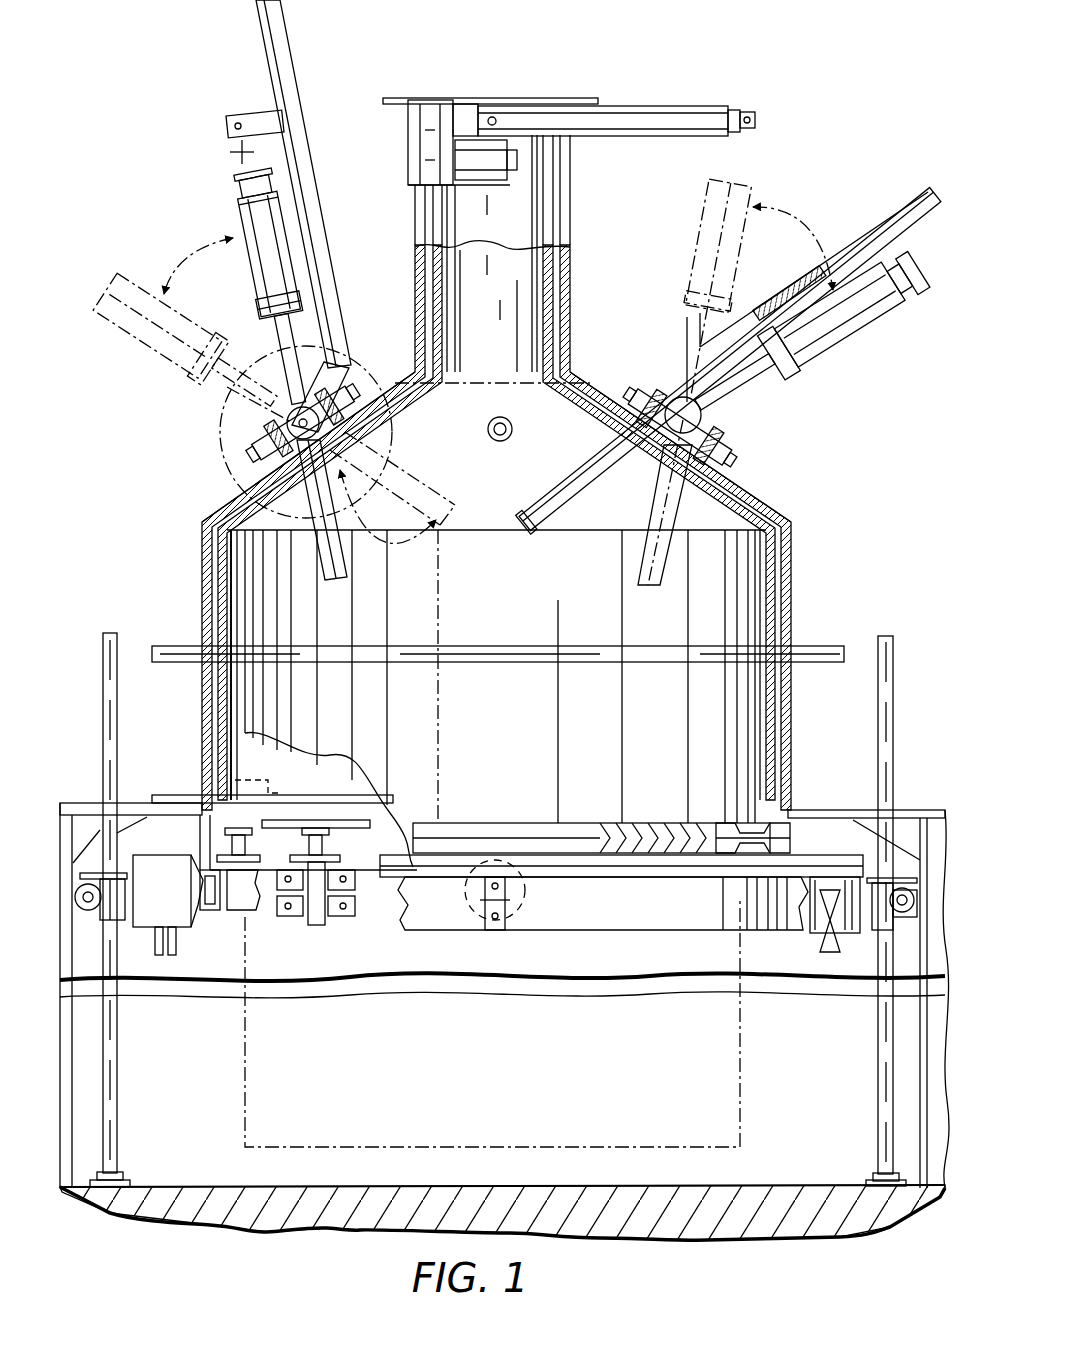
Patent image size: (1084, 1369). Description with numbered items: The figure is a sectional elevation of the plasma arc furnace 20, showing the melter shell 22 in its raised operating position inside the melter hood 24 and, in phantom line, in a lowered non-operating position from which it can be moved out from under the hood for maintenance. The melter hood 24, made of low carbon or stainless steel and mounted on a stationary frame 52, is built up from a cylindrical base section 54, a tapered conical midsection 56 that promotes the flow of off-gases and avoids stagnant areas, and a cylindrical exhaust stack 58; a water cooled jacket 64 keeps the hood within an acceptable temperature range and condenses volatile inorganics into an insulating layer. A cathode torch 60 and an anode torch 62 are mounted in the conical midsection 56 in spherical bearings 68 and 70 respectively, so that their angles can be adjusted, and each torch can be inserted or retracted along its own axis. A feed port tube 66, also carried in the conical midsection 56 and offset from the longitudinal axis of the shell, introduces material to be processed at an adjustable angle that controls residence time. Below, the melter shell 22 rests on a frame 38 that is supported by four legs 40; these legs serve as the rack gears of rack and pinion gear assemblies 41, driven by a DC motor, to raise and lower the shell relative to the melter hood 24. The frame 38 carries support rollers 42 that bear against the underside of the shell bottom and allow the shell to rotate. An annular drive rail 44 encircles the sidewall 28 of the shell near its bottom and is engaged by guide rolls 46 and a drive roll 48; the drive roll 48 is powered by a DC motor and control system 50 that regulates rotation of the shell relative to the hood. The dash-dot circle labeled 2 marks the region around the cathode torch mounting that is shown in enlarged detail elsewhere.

The plasma arc furnace 20 is at (797, 128).
The melter shell 22 is at (706, 701).
The melter hood 24 is at (792, 558).
The sidewall 28 is at (750, 781).
The frame 38 is at (670, 920).
The legs 40 is at (114, 1080).
The rack and pinion gear assemblies 41 is at (118, 924).
The support rollers 42 is at (528, 900).
The annular drive rail 44 is at (548, 833).
The guide rolls 46 is at (793, 848).
The drive roll 48 is at (330, 834).
The DC motor and control system 50 is at (253, 813).
The stationary frame 52 is at (907, 810).
The cylindrical base section 54 is at (792, 742).
The conical midsection 56 is at (214, 516).
The cylindrical exhaust stack 58 is at (577, 234).
The cathode torch 60 is at (339, 472).
The anode torch 62 is at (575, 505).
The water cooled jacket 64 is at (753, 508).
The feed port tube 66 is at (515, 424).
The spherical bearing 68 is at (283, 428).
The spherical bearing 70 is at (731, 428).
The detail circle for FIG. 2 is at (221, 431).